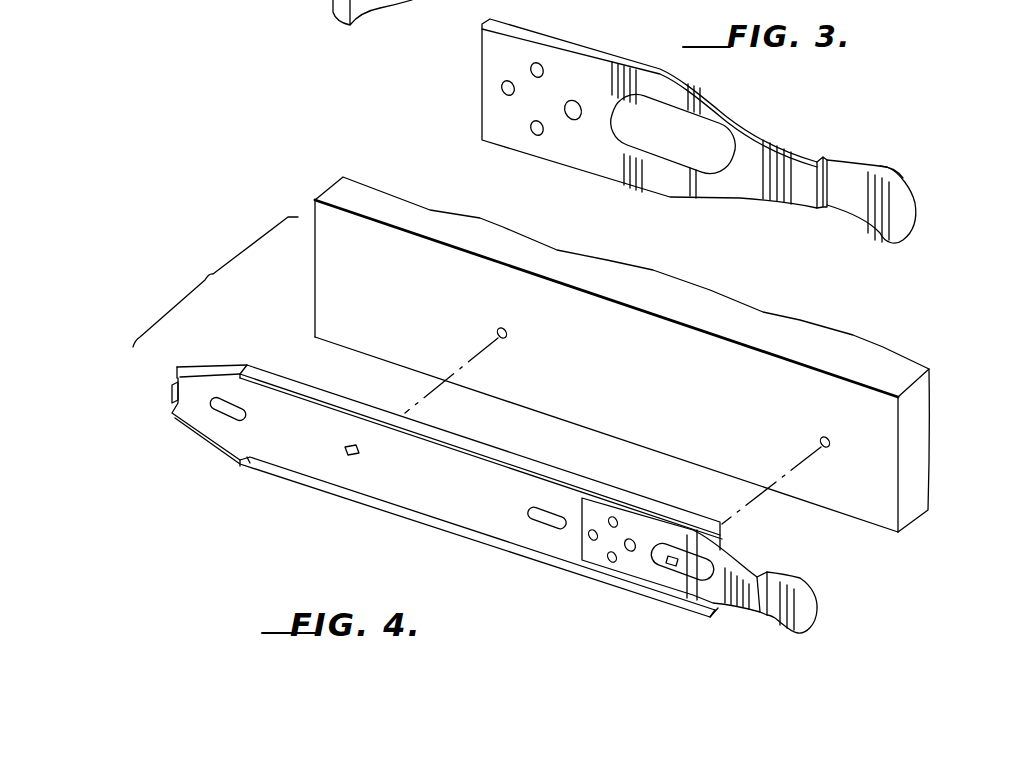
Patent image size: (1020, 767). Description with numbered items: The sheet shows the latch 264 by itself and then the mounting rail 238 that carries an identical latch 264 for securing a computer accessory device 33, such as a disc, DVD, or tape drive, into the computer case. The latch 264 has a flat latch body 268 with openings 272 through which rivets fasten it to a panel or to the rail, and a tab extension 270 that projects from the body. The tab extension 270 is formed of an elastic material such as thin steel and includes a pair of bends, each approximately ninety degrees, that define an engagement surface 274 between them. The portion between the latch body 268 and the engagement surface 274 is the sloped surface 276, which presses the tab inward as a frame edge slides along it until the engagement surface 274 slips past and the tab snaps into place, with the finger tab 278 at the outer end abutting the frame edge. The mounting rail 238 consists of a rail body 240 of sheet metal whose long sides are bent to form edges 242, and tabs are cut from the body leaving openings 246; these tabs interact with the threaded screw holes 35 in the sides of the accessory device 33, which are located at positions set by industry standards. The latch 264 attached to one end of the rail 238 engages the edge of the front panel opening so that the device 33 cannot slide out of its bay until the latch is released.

In FIG. 4, the computer accessory device 33 is at (710, 298).
In FIG. 4, the threaded screw holes 35 is at (512, 333).
In FIG. 4, the mounting rail 238 is at (206, 459).
In FIG. 4, the rail body 240 is at (192, 397).
In FIG. 4, the edges 242 is at (262, 470).
In FIG. 4, the openings 246 is at (343, 449).
In FIG. 3, the latch 264 is at (472, 94).
In FIG. 4, the latch 264 is at (718, 626).
In FIG. 3, the latch body 268 is at (597, 62).
In FIG. 3, the tab extension 270 is at (883, 234).
In FIG. 3, the openings 272 is at (570, 120).
In FIG. 4, the openings 272 is at (591, 539).
In FIG. 3, the engagement surface 274 is at (819, 160).
In FIG. 4, the engagement surface 274 is at (765, 615).
In FIG. 3, the sloped surface 276 is at (808, 202).
In FIG. 4, the sloped surface 276 is at (757, 617).
In FIG. 3, the finger tab 278 is at (893, 167).
In FIG. 4, the finger tab 278 is at (800, 578).